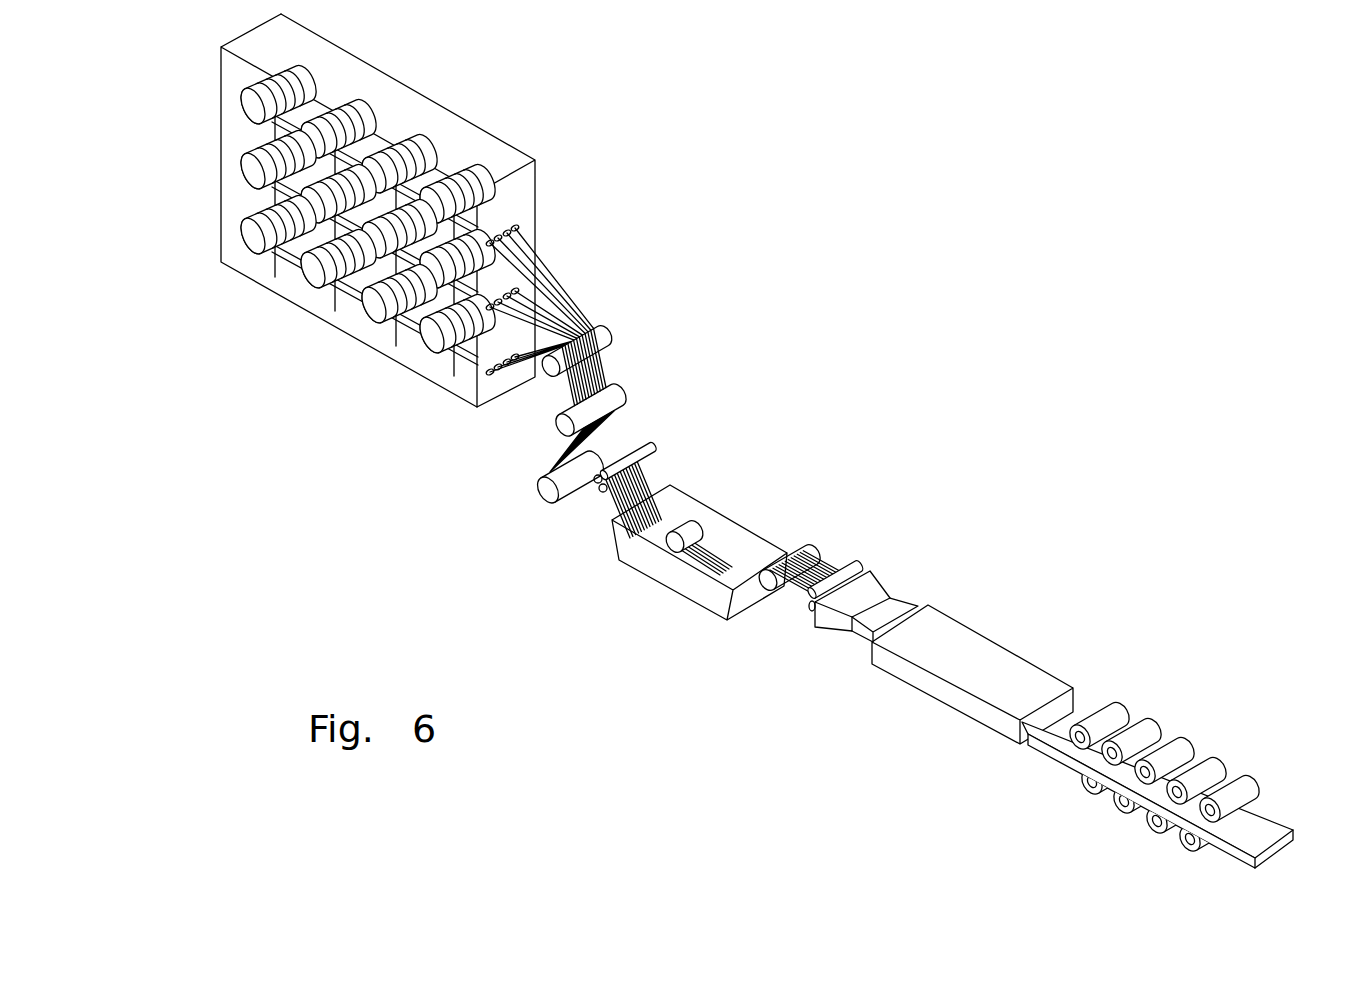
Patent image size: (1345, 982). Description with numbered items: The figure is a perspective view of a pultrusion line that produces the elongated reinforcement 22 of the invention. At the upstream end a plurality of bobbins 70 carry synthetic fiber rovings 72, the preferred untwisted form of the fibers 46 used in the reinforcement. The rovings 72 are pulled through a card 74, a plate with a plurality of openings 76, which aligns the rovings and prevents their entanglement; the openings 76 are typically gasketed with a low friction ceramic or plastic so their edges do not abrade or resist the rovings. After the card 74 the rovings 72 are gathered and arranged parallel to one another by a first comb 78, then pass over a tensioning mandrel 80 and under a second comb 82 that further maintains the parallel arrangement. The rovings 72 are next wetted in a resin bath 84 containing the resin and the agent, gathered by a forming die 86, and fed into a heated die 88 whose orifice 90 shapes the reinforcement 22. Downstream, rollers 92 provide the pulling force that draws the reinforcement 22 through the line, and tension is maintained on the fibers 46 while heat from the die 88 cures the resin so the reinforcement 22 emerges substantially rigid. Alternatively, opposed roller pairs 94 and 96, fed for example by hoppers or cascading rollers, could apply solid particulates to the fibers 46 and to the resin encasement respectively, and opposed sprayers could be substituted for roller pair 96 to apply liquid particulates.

The bobbins 70 is at (370, 308).
The rovings 72 is at (337, 127).
The card 74 is at (500, 152).
The openings 76 is at (508, 230).
The fibers 46 is at (548, 357).
The first comb 78 is at (604, 340).
The tensioning mandrel 80 is at (620, 396).
The second comb 82 is at (603, 462).
The roller pair 96 is at (657, 452).
The resin bath 84 is at (733, 511).
The roller pair 94 is at (857, 566).
The forming die 86 is at (887, 570).
The orifice 90 is at (908, 606).
The heated die 88 is at (962, 648).
The rollers 92 is at (1248, 797).
The reinforcement 22 is at (1258, 830).